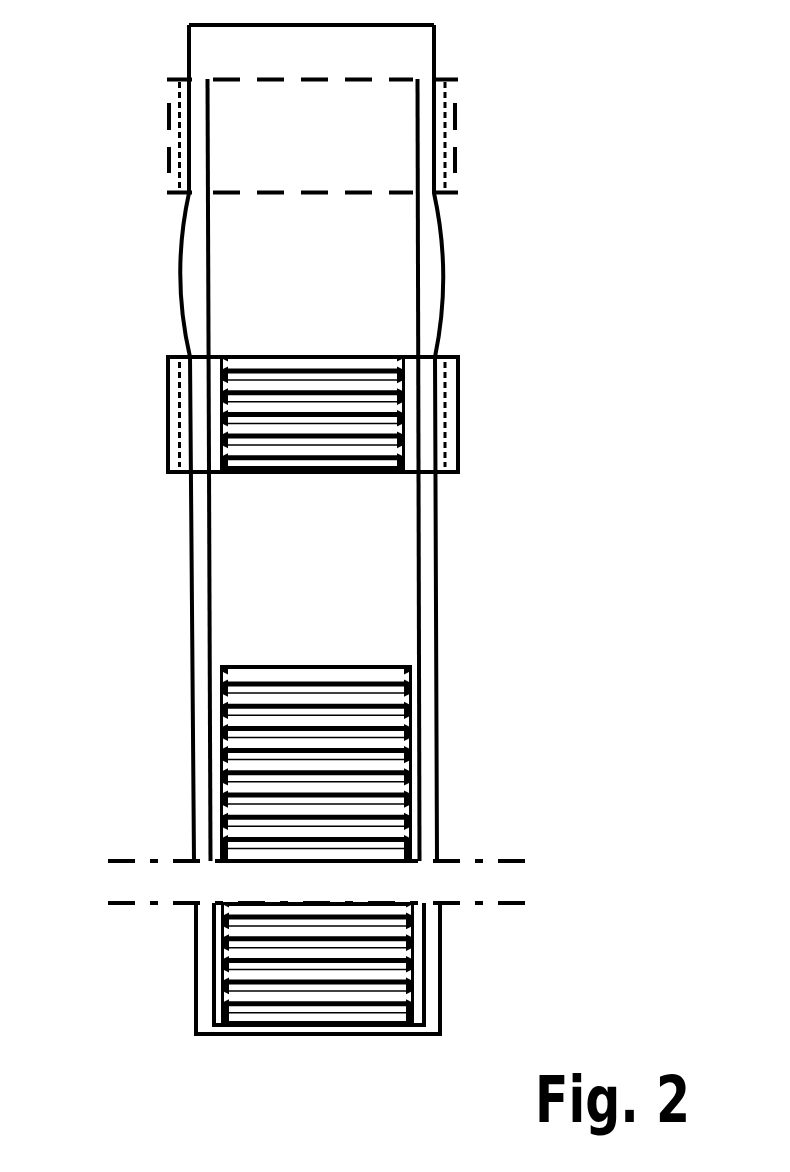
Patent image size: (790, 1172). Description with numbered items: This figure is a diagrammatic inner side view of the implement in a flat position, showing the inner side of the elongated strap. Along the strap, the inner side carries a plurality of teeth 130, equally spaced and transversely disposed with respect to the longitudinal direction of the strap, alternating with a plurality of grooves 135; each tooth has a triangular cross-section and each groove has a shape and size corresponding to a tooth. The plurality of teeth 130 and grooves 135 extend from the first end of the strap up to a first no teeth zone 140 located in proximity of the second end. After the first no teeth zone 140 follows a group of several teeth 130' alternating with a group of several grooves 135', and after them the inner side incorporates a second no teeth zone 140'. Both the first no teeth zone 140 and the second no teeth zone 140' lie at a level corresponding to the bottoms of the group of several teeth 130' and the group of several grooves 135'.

The plurality of teeth 130 is at (231, 965).
The plurality of grooves 135 is at (233, 963).
The first no teeth zone 140 is at (415, 794).
The group of several teeth 130' is at (227, 487).
The group of several grooves 135' is at (254, 414).
The second no teeth zone 140' is at (401, 443).